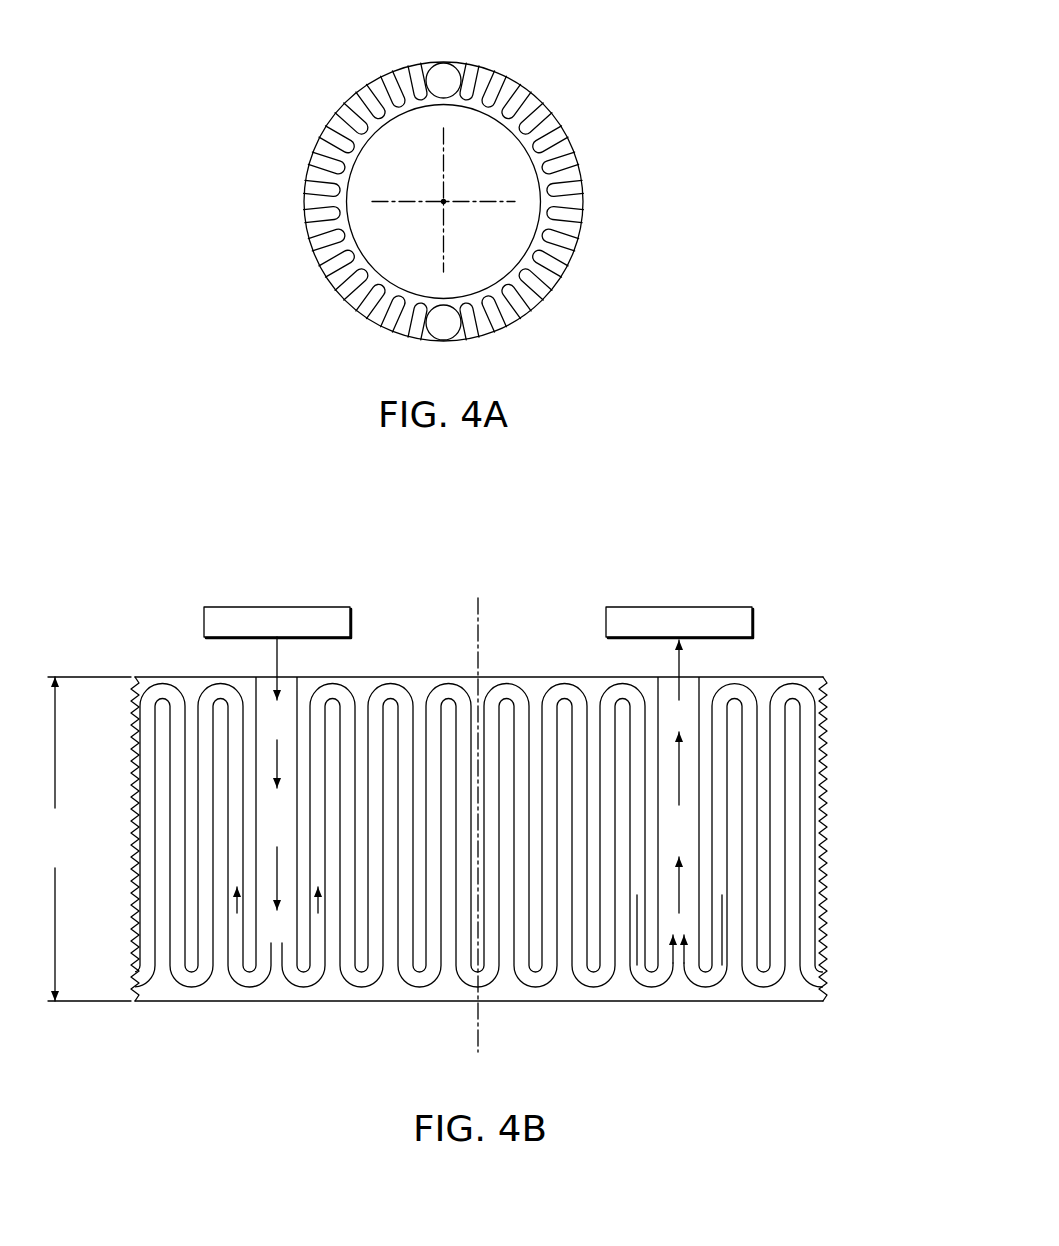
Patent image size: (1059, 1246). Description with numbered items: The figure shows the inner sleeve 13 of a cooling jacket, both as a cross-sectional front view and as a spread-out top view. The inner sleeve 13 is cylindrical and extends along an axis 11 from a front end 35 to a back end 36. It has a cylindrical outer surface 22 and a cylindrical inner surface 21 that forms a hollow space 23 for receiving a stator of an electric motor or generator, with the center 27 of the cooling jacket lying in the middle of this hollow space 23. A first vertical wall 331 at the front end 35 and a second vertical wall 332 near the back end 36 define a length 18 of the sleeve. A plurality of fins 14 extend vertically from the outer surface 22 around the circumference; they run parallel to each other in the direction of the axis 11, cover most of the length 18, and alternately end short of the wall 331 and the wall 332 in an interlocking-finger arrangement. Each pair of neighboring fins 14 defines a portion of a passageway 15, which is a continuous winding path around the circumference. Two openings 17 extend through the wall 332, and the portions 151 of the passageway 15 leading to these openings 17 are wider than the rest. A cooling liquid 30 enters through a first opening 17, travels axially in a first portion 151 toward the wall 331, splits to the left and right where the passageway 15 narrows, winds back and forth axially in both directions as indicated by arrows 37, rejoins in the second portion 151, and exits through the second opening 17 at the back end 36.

In FIG. 4A, the inner sleeve 13 is at (590, 89).
In FIG. 4B, the inner sleeve 13 is at (193, 552).
In FIG. 4A, the fins 14 is at (323, 260).
In FIG. 4B, the fins 14 is at (793, 790).
In FIG. 4A, the passageway 15 is at (429, 197).
In FIG. 4B, the passageway 15 is at (148, 748).
In FIG. 4A, the portions of the passageway 151 is at (428, 65).
In FIG. 4B, the portions of the passageway 151 is at (261, 826).
In FIG. 4A, the openings 17 is at (450, 72).
In FIG. 4B, the length 18 is at (86, 839).
In FIG. 4A, the cylindrical inner surface 21 is at (372, 262).
In FIG. 4A, the cylindrical outer surface 22 is at (532, 86).
In FIG. 4A, the hollow space 23 is at (482, 202).
In FIG. 4A, the center 27 is at (444, 204).
In FIG. 4B, the cooling liquid 30 is at (293, 606).
In FIG. 4B, the front end 35 is at (479, 1049).
In FIG. 4B, the back end 36 is at (482, 627).
In FIG. 4B, the arrows 37 is at (276, 660).
In FIG. 4B, the axis 11 is at (478, 1010).
In FIG. 4B, the first vertical wall 331 is at (820, 1003).
In FIG. 4B, the second vertical wall 332 is at (815, 676).